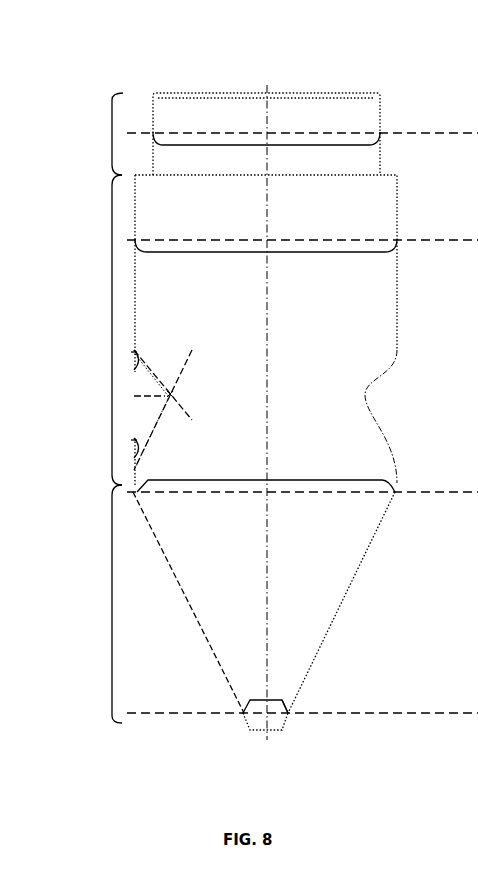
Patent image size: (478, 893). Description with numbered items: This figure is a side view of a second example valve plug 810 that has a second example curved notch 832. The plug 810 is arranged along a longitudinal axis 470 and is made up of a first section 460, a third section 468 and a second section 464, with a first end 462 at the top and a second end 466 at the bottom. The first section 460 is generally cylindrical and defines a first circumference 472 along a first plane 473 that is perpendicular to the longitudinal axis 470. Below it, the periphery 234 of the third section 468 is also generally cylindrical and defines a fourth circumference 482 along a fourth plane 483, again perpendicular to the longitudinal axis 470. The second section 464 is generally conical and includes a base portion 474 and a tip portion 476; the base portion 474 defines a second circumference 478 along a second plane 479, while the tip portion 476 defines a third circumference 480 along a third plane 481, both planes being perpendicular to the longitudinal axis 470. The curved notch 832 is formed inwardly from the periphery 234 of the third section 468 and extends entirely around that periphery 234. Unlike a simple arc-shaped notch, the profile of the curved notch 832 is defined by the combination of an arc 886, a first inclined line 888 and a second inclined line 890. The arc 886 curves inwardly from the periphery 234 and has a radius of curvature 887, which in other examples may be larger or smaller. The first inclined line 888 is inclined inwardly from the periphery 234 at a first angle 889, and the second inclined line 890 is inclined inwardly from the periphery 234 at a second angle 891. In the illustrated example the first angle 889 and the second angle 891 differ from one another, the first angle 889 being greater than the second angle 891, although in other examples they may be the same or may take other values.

The valve plug 810 is at (392, 58).
The first end 462 is at (297, 93).
The first plane 473 is at (415, 133).
The first circumference 472 is at (315, 145).
The first section 460 is at (112, 133).
The third section 468 is at (112, 242).
The second section 464 is at (112, 603).
The periphery 234 is at (397, 303).
The fourth plane 483 is at (415, 240).
The fourth circumference 482 is at (320, 252).
The curved notch 832 is at (385, 442).
The first angle 889 is at (137, 360).
The second angle 891 is at (140, 444).
The radius of curvature 887 is at (141, 394).
The arc 886 is at (163, 403).
The first inclined line 888 is at (192, 418).
The second inclined line 890 is at (193, 358).
The second circumference 478 is at (327, 480).
The second plane 479 is at (421, 492).
The base portion 474 is at (388, 508).
The longitudinal axis 470 is at (267, 632).
The third circumference 480 is at (280, 700).
The third plane 481 is at (393, 713).
The second end 466 is at (257, 730).
The tip portion 476 is at (285, 722).